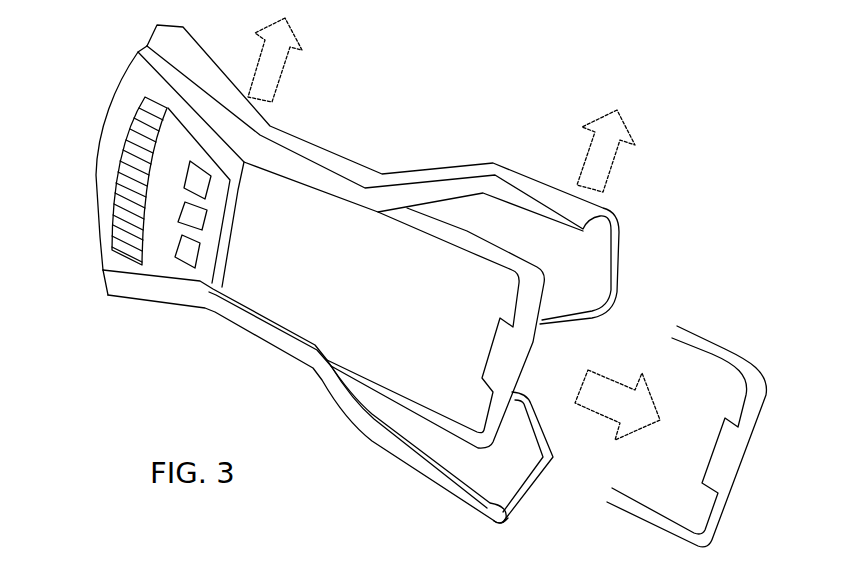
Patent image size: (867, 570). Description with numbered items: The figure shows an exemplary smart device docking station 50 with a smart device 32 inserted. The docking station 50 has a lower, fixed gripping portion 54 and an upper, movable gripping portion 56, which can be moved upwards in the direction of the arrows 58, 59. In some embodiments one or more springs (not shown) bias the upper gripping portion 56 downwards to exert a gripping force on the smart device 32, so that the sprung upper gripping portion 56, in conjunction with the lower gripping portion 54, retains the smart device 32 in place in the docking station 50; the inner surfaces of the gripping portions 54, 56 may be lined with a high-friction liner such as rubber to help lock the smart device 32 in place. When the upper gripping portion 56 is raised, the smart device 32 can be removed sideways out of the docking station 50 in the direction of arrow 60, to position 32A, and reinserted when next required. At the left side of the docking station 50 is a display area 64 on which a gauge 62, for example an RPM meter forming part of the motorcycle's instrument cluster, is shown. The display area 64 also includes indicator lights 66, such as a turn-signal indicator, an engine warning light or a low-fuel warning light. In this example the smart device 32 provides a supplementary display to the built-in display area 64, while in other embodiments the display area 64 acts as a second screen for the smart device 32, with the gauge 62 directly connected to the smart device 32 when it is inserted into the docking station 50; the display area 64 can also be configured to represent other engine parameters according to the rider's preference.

The docking station 50 is at (84, 70).
The smart device 32 is at (527, 357).
The position 32A is at (747, 450).
The lower gripping portion 54 is at (323, 383).
The upper gripping portion 56 is at (348, 157).
The arrow 58 is at (282, 78).
The arrow 59 is at (615, 168).
The arrow 60 is at (592, 413).
The gauge 62 is at (115, 235).
The display area 64 is at (96, 185).
The indicator lights 66 is at (179, 268).